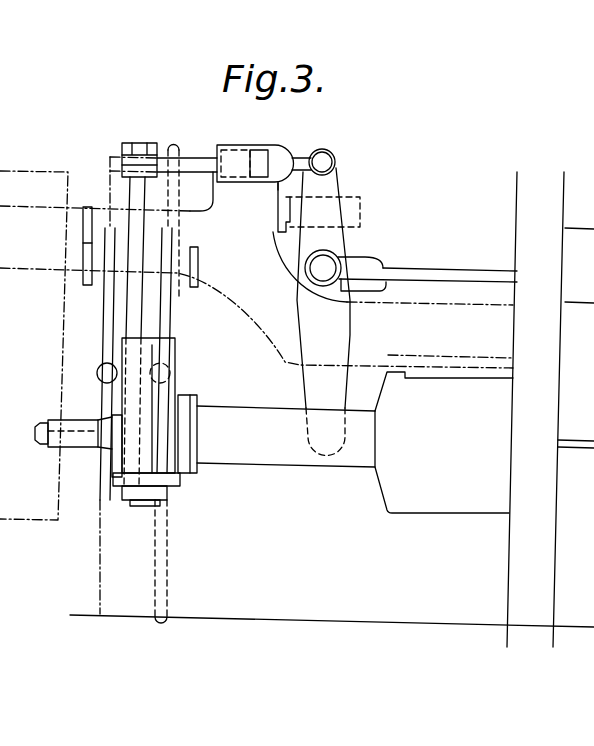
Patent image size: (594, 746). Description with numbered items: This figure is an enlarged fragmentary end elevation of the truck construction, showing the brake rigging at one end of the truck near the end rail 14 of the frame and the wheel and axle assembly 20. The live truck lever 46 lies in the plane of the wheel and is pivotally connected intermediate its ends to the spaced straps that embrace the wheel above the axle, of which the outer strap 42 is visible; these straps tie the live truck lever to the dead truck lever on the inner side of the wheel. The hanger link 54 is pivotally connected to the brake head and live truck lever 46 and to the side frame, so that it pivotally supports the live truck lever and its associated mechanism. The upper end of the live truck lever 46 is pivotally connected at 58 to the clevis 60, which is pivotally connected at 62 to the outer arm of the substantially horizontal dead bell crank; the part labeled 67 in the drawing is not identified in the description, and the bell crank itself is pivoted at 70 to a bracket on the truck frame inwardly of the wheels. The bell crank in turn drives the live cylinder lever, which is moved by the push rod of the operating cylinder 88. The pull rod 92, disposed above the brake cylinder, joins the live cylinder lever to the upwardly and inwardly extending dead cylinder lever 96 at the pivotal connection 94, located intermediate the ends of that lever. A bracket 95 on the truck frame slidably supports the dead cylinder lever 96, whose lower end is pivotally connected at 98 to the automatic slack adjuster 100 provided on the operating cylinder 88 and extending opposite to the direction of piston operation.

The end rail 14 is at (530, 409).
The wheel and axle assembly 20 is at (140, 568).
The outer strap 42 is at (90, 207).
The live truck lever 46 is at (136, 314).
The hanger link 54 is at (107, 321).
The pivotal connection 58 is at (143, 143).
The clevis 60 is at (288, 130).
The pivotal connection 62 is at (328, 160).
The arm 67 is at (198, 155).
The pivotal connection 70 is at (198, 250).
The operating cylinder 88 is at (445, 495).
The pull rod 92 is at (457, 272).
The pivotal connection 94 is at (327, 263).
The bracket 95 is at (330, 207).
The dead cylinder lever 96 is at (340, 190).
The pivotal connection 98 is at (328, 443).
The automatic slack adjuster 100 is at (222, 453).